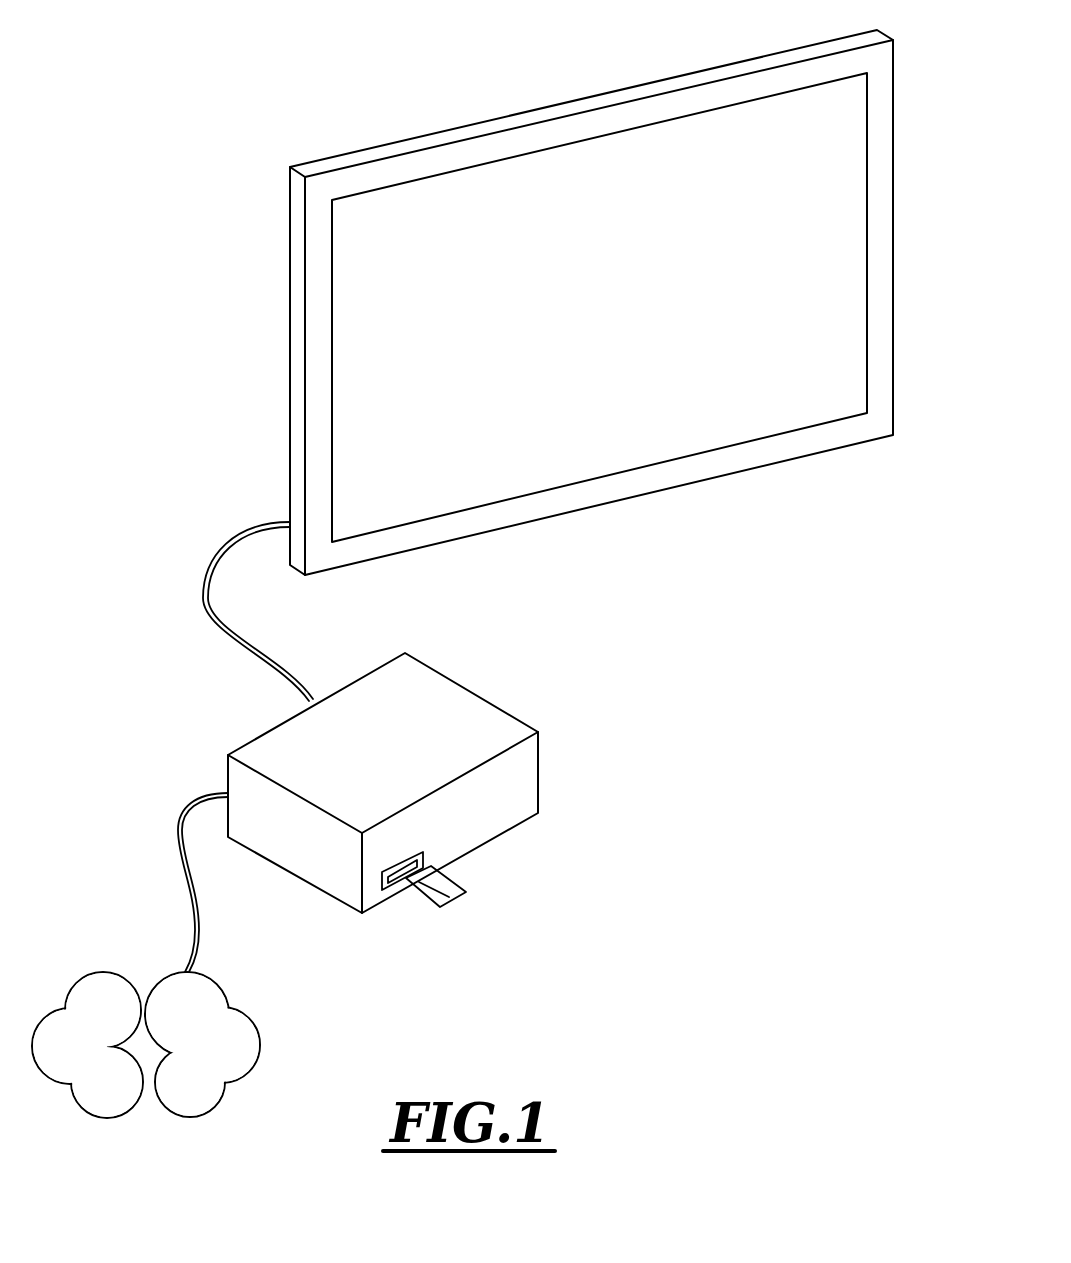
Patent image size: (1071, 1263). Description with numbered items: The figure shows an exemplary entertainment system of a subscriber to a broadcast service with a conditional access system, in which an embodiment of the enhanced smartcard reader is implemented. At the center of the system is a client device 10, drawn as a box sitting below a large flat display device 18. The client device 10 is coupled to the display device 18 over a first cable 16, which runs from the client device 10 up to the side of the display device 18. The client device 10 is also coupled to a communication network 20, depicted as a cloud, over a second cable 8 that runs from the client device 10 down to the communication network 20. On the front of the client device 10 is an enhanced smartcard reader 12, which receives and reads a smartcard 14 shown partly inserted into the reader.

The display device 18 is at (783, 448).
The first cable 16 is at (213, 628).
The client device 10 is at (528, 773).
The enhanced smartcard reader 12 is at (395, 890).
The smartcard 14 is at (460, 893).
The second cable 8 is at (183, 878).
The communication network 20 is at (260, 1040).